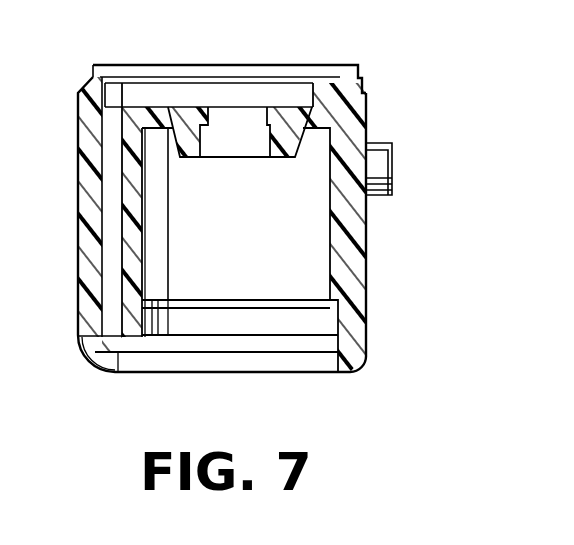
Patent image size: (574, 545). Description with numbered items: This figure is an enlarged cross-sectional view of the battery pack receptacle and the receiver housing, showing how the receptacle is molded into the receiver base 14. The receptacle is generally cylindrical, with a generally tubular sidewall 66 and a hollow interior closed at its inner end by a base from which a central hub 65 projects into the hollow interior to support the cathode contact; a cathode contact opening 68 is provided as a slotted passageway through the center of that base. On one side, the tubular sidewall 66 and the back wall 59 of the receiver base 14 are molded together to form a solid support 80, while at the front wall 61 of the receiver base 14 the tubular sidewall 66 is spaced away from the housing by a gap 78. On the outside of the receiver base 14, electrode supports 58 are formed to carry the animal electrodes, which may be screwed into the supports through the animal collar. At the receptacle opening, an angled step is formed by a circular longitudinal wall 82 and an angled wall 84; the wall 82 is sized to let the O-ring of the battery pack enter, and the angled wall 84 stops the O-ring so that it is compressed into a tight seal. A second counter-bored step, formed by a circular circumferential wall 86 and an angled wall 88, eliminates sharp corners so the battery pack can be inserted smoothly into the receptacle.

The receiver base 14 is at (80, 128).
The front wall 61 is at (80, 178).
The tubular sidewall 66 is at (132, 228).
The gap 78 is at (108, 283).
The cathode contact opening 68 is at (226, 125).
The central hub 65 is at (280, 148).
The electrode supports 58 is at (384, 152).
The solid support 80 is at (358, 250).
The back wall 59 is at (370, 280).
The angled wall 88 is at (148, 305).
The circular circumferential wall 86 is at (188, 318).
The angled wall 84 is at (247, 340).
The circular longitudinal wall 82 is at (308, 358).